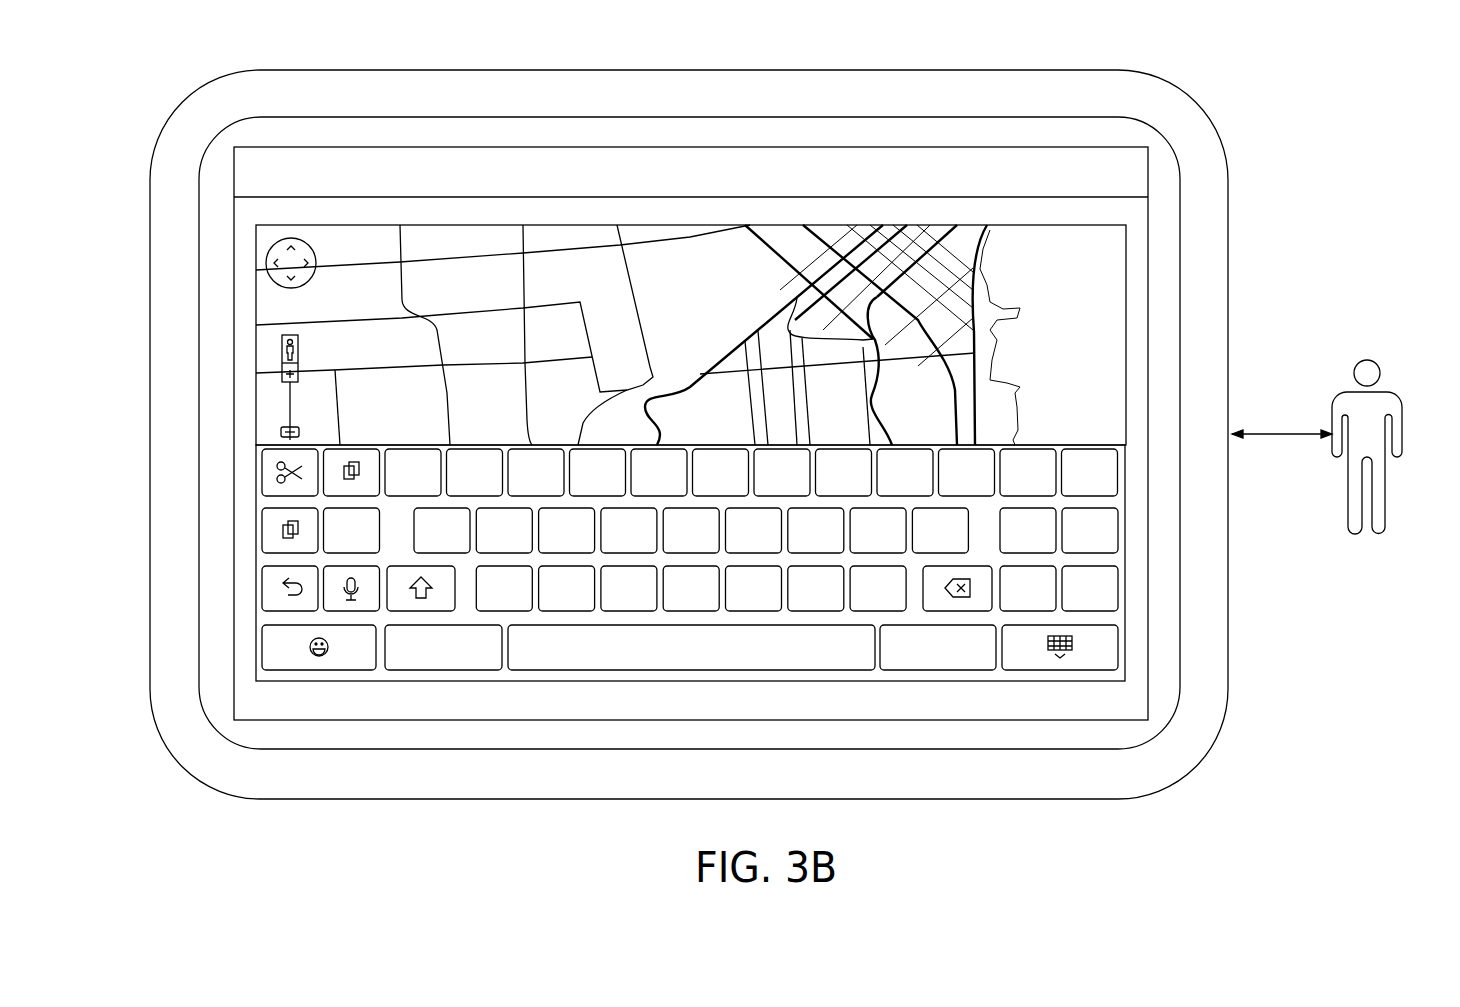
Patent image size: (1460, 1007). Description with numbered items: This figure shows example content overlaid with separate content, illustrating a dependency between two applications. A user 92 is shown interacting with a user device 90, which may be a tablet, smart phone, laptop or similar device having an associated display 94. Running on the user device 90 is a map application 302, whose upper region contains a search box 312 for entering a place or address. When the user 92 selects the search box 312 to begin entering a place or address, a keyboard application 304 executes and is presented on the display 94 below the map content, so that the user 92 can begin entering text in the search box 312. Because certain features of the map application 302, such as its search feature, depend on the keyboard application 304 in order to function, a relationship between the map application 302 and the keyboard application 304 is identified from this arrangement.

The user device 90 is at (982, 70).
The display 94 is at (844, 117).
The search box 312 is at (1140, 173).
The map application 302 is at (277, 353).
The keyboard application 304 is at (1125, 555).
The user 92 is at (1380, 372).